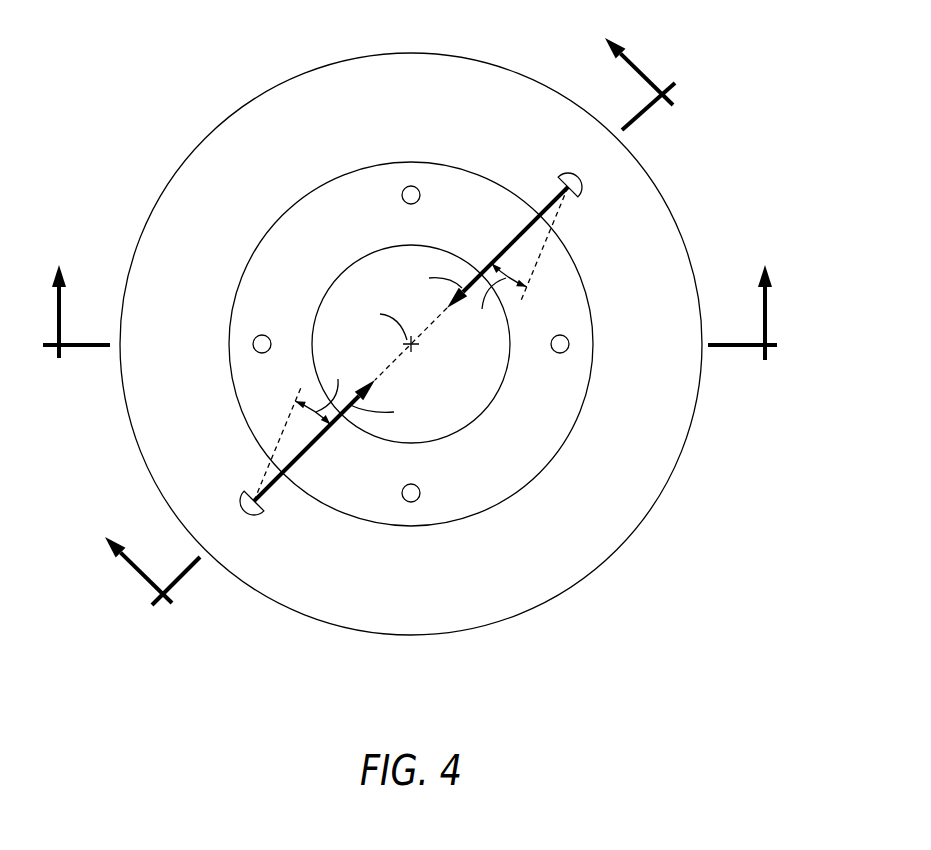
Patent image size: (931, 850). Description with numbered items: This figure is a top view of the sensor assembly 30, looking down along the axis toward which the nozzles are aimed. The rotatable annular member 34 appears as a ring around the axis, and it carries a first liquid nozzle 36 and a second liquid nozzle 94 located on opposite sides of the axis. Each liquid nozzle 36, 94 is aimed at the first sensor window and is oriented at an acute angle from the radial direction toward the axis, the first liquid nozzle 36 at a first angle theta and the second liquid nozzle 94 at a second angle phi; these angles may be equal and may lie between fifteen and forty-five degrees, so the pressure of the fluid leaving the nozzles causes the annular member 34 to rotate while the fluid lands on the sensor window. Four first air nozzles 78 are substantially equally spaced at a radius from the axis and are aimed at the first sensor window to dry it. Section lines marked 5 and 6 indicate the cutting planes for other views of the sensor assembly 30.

The sensor assembly 30 is at (132, 59).
The annular member 34 is at (678, 224).
The first liquid nozzle 36 is at (263, 510).
The first air nozzles 78 is at (406, 187).
The second liquid nozzle 94 is at (556, 180).
The section line 5- 5 is at (395, 340).
The section line 6- 6 is at (410, 314).